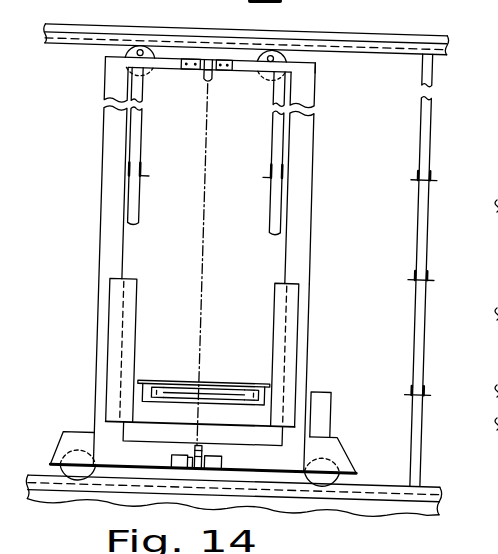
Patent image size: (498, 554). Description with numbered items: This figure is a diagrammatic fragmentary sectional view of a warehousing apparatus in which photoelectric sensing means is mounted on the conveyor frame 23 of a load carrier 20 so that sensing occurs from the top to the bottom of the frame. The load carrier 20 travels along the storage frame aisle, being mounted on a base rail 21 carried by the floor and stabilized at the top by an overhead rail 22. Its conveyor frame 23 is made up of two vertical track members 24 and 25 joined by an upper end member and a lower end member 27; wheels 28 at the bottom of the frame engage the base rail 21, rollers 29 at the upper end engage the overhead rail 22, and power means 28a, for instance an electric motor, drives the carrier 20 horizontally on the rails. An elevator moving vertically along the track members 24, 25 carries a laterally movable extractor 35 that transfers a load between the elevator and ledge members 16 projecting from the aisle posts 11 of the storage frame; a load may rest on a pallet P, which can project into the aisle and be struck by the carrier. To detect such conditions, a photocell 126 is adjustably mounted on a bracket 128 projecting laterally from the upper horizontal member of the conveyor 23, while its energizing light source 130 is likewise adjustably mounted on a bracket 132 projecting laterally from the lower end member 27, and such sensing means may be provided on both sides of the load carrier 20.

The aisle posts 11 is at (138, 139).
The ledge members 16 is at (139, 176).
The load carrier 20 is at (268, 316).
The base rail 21 is at (79, 512).
The overhead rail 22 is at (383, 41).
The conveyor frame 23 is at (310, 161).
The vertical track member 24 is at (99, 211).
The vertical track member 25 is at (310, 208).
The lower end member 27 is at (303, 515).
The wheels 28 is at (62, 470).
The power means 28a is at (335, 410).
The rollers 29 is at (111, 53).
The extractor 35 is at (166, 399).
The photocell 126 is at (199, 74).
The bracket 128 is at (201, 59).
The light source 130 is at (221, 458).
The bracket 132 is at (177, 462).
The pallet P is at (239, 387).